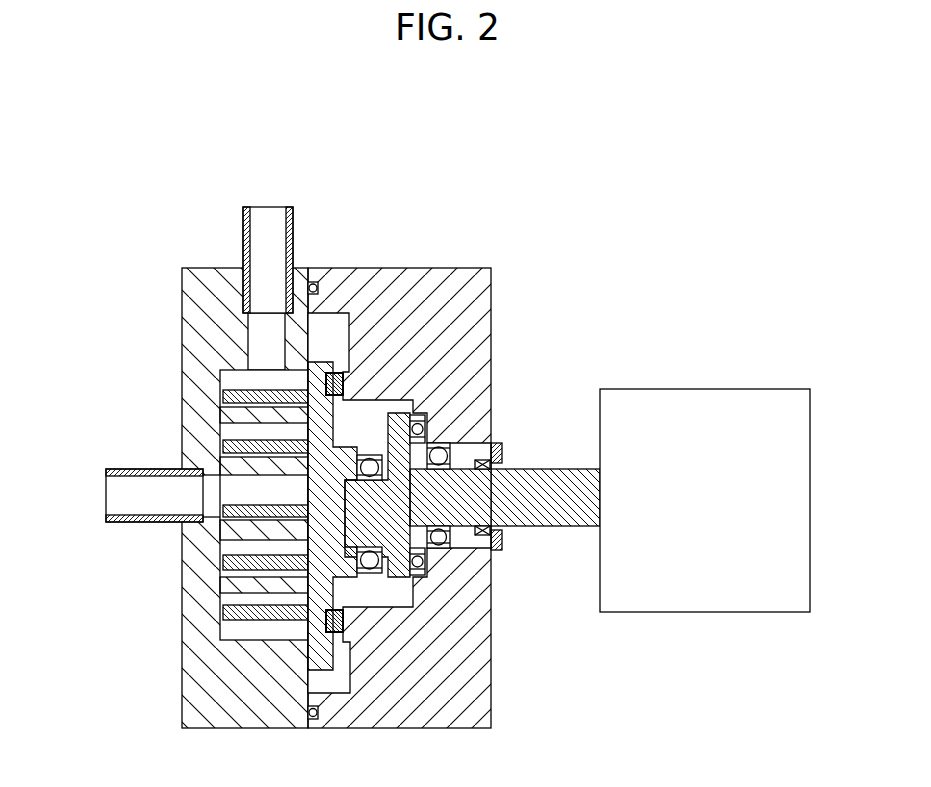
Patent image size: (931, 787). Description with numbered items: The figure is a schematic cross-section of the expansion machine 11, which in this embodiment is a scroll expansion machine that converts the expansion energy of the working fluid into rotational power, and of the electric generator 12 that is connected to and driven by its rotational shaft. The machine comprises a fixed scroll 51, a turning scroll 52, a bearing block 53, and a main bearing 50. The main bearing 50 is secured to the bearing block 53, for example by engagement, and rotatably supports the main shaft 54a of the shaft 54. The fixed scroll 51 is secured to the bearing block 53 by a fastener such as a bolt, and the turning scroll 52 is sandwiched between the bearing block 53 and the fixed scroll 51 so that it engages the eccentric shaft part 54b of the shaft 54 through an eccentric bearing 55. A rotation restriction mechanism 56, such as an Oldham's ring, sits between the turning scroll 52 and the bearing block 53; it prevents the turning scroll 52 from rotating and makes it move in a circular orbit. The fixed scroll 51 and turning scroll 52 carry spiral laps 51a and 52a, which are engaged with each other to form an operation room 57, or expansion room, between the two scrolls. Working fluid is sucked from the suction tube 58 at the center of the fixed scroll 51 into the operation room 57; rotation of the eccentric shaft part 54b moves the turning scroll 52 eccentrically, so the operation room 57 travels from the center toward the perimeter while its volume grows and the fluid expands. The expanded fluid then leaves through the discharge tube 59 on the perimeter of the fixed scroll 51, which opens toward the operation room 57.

The expansion machine 11 is at (458, 162).
The electric generator 12 is at (712, 415).
The main bearing 50 is at (455, 450).
The fixed scroll 51 is at (215, 296).
The spiral lap 51a is at (222, 397).
The turning scroll 52 is at (328, 362).
The spiral lap 52a is at (230, 368).
The bearing block 53 is at (440, 313).
The shaft 54 is at (553, 623).
The main shaft 54a is at (455, 490).
The eccentric shaft part 54b is at (375, 515).
The eccentric bearing 55 is at (370, 556).
The rotation restriction mechanism 56 is at (330, 633).
The operation room 57 is at (248, 598).
The suction tube 58 is at (128, 498).
The discharge tube 59 is at (262, 240).